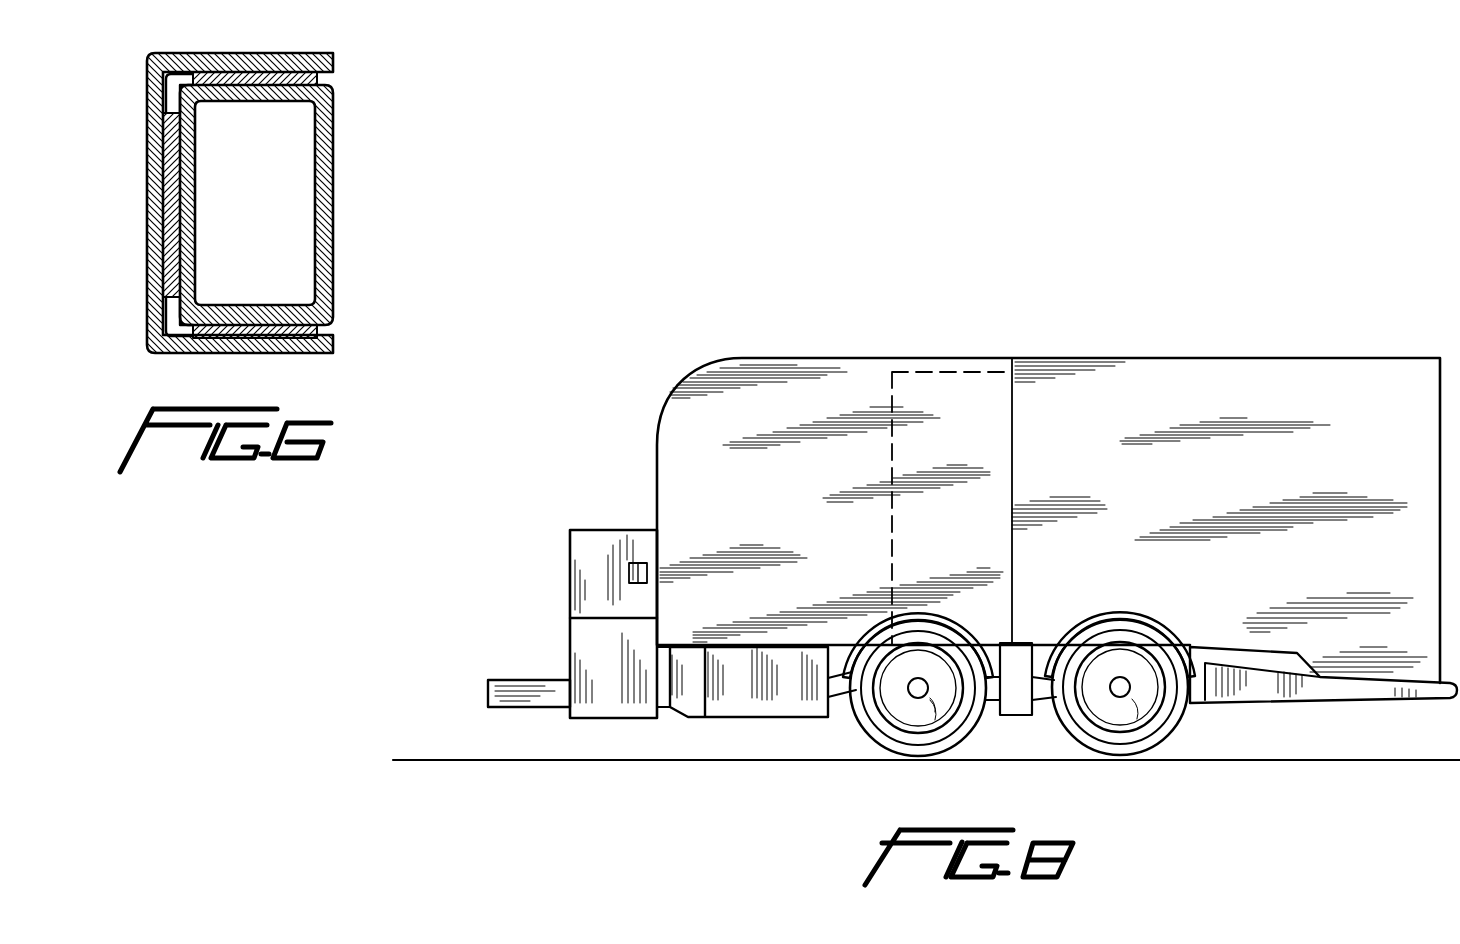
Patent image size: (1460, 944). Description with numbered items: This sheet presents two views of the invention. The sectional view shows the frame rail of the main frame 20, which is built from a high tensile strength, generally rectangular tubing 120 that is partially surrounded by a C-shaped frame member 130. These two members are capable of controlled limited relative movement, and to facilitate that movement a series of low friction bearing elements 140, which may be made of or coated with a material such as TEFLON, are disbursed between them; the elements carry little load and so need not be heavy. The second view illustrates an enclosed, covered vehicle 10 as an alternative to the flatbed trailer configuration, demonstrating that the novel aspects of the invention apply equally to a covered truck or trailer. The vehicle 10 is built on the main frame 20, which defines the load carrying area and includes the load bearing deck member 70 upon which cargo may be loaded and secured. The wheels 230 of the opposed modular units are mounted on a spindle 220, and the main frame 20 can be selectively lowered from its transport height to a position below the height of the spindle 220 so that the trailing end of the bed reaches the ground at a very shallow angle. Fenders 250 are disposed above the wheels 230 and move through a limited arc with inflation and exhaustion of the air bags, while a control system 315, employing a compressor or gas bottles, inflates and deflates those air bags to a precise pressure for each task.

In FIG. 8, the vehicle 10 is at (473, 545).
In FIG. 8, the main frame 20 is at (520, 678).
In FIG. 8, the deck member 70 is at (1423, 700).
In FIG. 6, the tubing 120 is at (332, 285).
In FIG. 6, the C-shaped frame member 130 is at (332, 60).
In FIG. 6, the low friction bearing elements 140 is at (332, 83).
In FIG. 8, the spindle 220 is at (928, 692).
In FIG. 8, the wheels 230 is at (883, 727).
In FIG. 8, the fenders 250 is at (930, 613).
In FIG. 8, the control system 315 is at (566, 577).